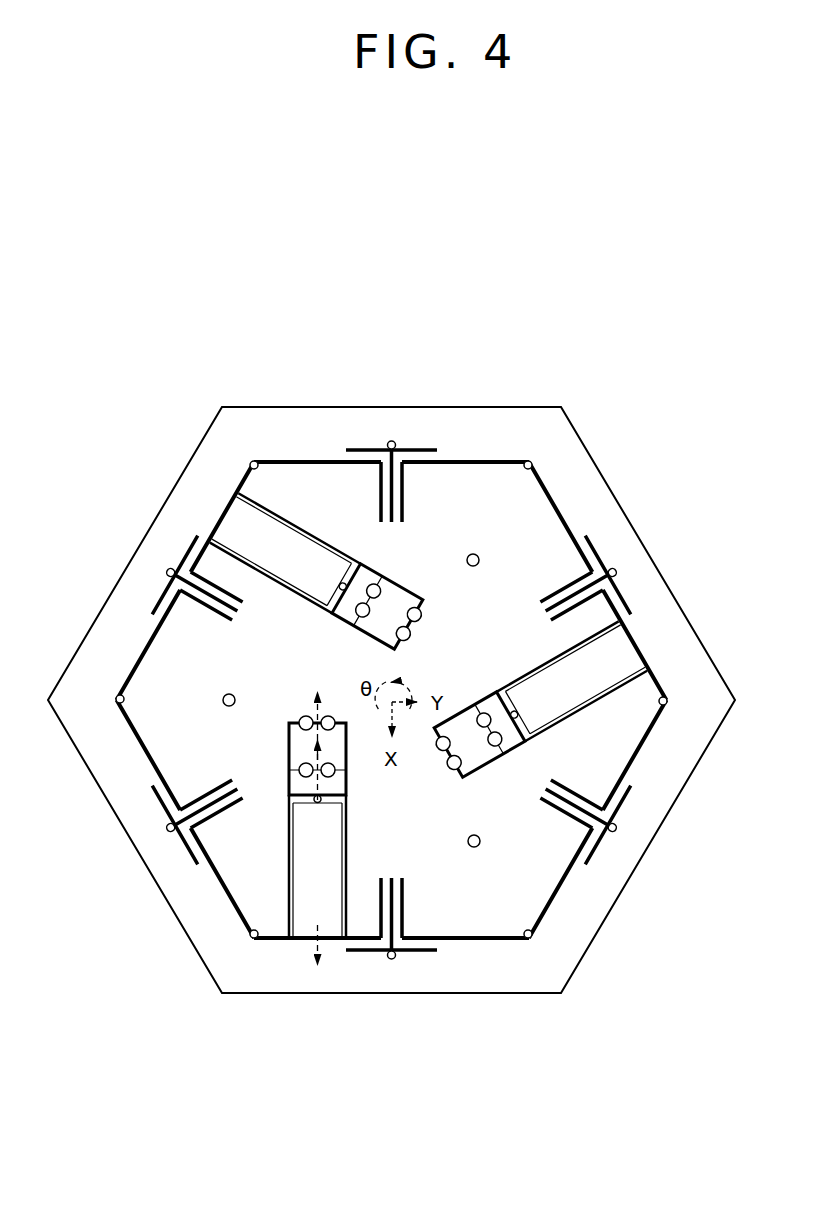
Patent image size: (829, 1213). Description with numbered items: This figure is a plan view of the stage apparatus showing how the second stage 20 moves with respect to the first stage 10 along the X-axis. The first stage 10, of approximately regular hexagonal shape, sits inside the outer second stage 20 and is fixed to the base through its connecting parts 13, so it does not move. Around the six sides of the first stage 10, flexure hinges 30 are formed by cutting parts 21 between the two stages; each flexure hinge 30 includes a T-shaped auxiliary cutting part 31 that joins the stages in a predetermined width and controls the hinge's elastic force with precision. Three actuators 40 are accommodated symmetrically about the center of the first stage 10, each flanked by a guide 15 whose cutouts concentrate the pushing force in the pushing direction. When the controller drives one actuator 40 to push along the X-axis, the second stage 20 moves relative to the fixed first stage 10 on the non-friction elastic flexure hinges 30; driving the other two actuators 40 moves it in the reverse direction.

The first stage 10 is at (555, 553).
The connecting part 13 is at (481, 846).
The guide 15 is at (477, 690).
The second stage 20 is at (572, 455).
The cutting part 21 is at (489, 938).
The flexure hinge 30 is at (195, 622).
The auxiliary cutting part 31 is at (183, 845).
The actuator 40 is at (512, 689).